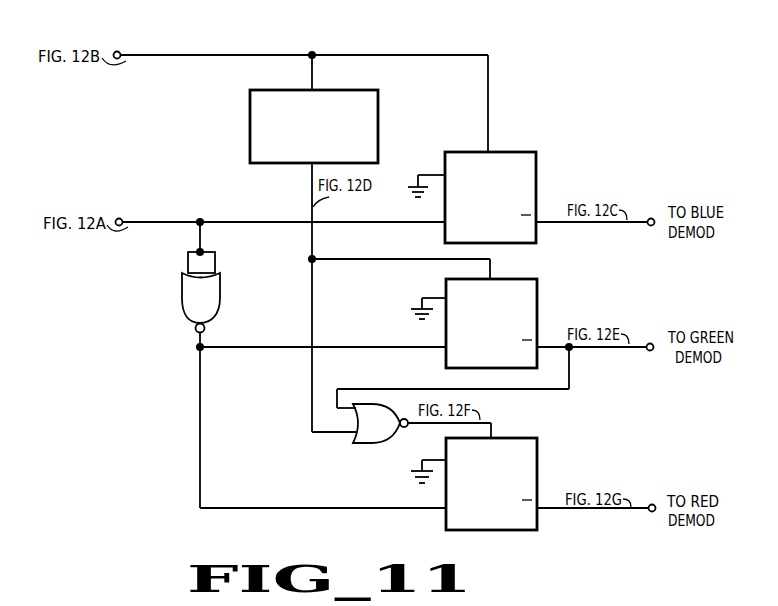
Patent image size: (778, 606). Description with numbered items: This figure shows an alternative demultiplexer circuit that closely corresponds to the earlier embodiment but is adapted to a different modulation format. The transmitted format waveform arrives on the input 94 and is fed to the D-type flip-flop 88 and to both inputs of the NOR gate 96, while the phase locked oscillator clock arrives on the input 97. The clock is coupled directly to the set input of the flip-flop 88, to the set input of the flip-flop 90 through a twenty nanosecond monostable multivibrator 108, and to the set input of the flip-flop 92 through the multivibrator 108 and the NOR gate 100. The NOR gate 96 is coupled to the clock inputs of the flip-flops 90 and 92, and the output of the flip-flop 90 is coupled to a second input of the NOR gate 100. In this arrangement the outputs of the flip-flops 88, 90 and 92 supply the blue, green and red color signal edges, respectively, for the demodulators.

The input 97 is at (118, 50).
The input 94 is at (120, 217).
The monostable multivibrator 108 is at (380, 122).
The D-type flip-flop 88 is at (524, 150).
The D-type flip-flop 90 is at (512, 277).
The D-type flip-flop 92 is at (512, 436).
The NOR gate 96 is at (222, 293).
The NOR gate 100 is at (370, 446).